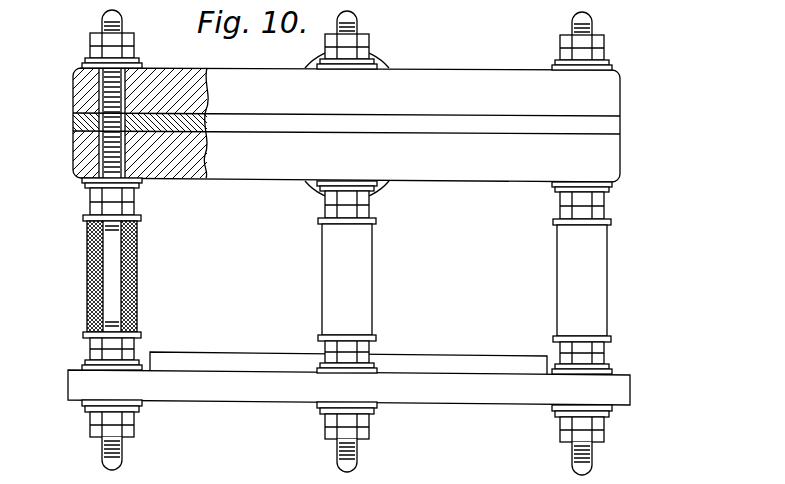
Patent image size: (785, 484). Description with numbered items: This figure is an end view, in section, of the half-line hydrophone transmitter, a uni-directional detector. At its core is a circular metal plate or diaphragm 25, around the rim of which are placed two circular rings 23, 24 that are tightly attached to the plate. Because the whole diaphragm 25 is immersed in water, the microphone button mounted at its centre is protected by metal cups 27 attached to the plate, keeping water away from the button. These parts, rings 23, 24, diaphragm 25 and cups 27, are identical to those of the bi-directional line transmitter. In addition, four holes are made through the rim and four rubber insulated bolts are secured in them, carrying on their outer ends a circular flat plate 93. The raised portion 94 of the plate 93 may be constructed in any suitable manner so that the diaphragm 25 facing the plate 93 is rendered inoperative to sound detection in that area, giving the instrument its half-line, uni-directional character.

The circular ring 23 is at (82, 88).
The circular metal plate or diaphragm 25 is at (80, 121).
The circular ring 24 is at (80, 157).
The metal cup 27 is at (381, 67).
The raised portion 94 is at (462, 362).
The circular flat plate 93 is at (475, 397).